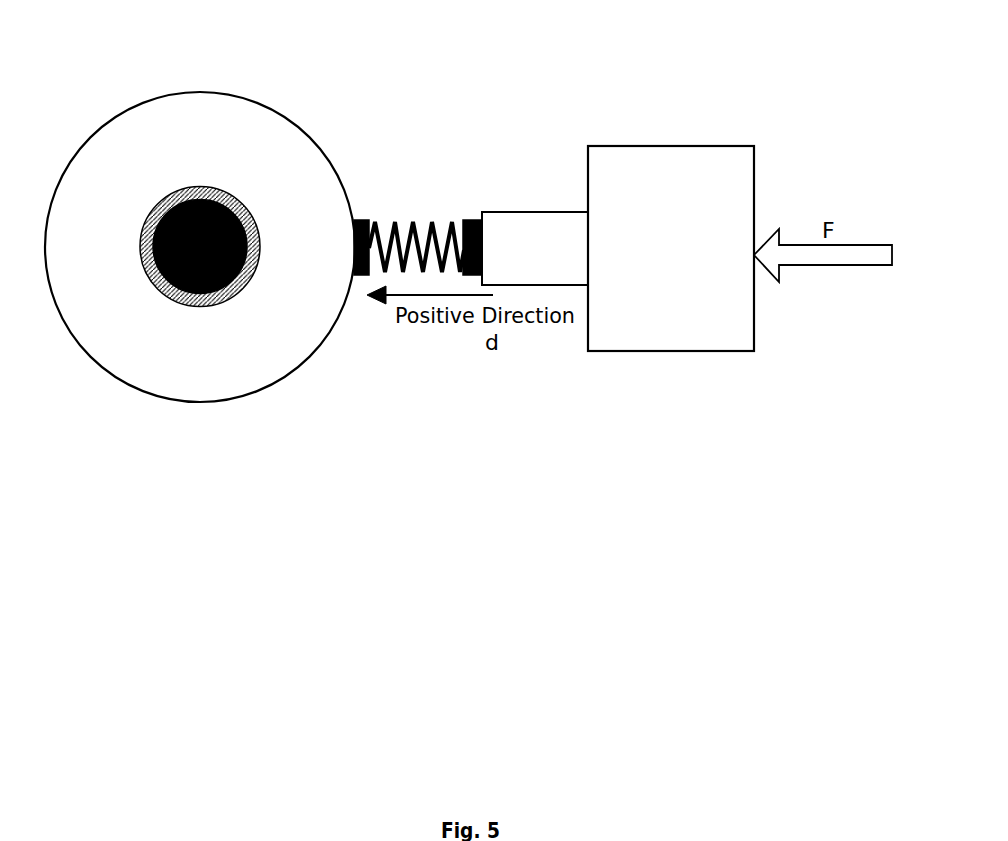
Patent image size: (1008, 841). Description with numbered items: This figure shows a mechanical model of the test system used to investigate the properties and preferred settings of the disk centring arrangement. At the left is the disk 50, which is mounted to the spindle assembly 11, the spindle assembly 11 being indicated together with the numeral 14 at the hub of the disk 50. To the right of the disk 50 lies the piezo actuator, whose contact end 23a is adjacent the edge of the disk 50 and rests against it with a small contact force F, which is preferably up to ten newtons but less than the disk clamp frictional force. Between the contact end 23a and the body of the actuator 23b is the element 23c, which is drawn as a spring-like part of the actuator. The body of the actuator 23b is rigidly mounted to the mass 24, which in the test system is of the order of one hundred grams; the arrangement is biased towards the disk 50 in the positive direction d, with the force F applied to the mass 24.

The disk 50 is at (205, 117).
The spindle assembly 11 is at (200, 338).
The bearing 14 is at (226, 300).
The contact end 23a is at (358, 220).
The spring 23c is at (431, 220).
The body of the actuator 23b is at (533, 225).
The mass 24 is at (679, 170).